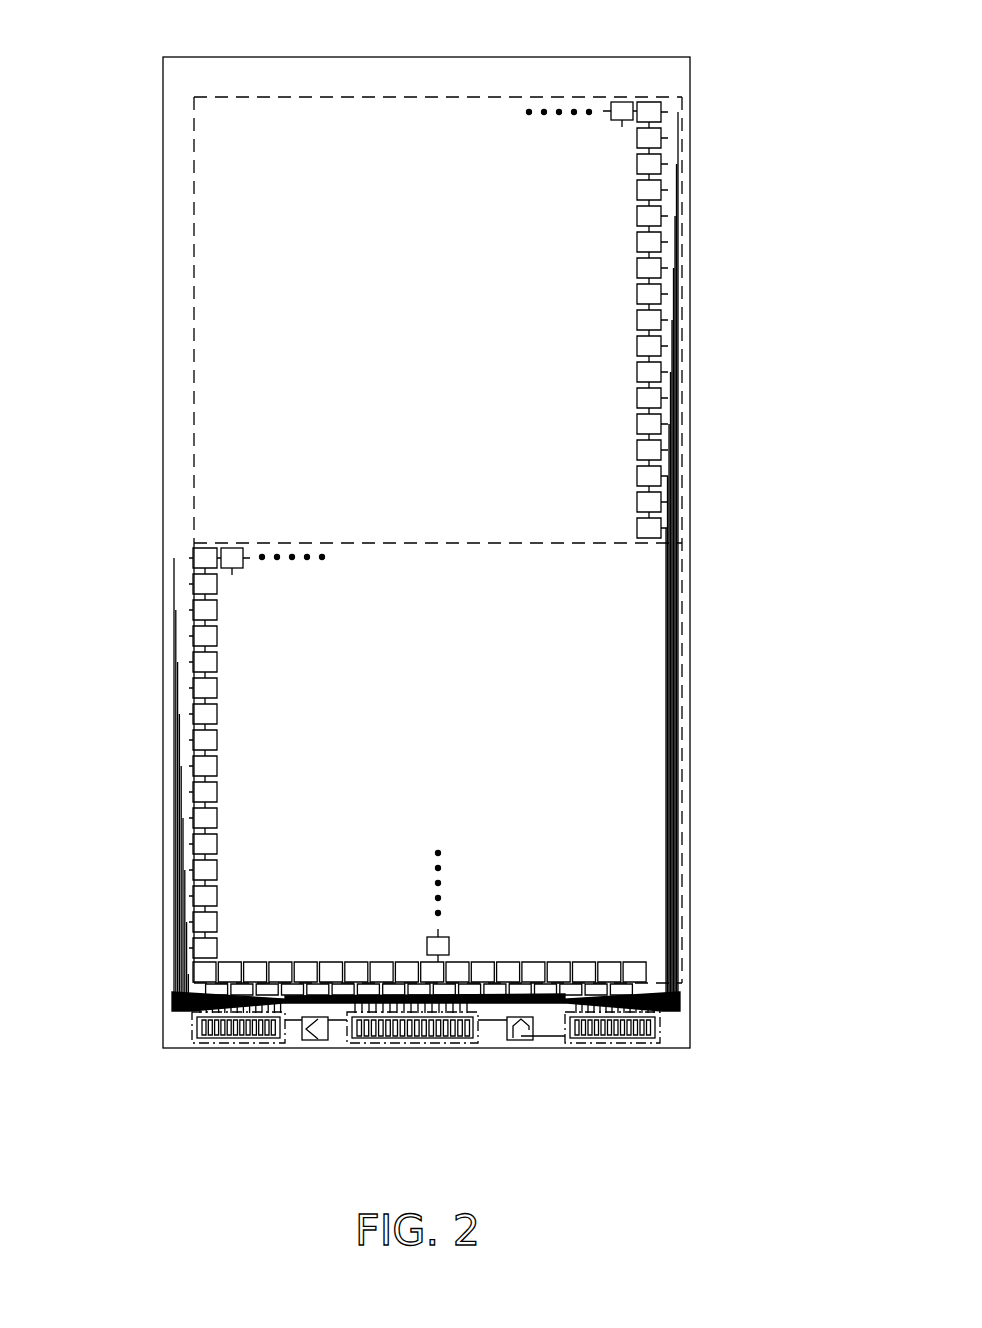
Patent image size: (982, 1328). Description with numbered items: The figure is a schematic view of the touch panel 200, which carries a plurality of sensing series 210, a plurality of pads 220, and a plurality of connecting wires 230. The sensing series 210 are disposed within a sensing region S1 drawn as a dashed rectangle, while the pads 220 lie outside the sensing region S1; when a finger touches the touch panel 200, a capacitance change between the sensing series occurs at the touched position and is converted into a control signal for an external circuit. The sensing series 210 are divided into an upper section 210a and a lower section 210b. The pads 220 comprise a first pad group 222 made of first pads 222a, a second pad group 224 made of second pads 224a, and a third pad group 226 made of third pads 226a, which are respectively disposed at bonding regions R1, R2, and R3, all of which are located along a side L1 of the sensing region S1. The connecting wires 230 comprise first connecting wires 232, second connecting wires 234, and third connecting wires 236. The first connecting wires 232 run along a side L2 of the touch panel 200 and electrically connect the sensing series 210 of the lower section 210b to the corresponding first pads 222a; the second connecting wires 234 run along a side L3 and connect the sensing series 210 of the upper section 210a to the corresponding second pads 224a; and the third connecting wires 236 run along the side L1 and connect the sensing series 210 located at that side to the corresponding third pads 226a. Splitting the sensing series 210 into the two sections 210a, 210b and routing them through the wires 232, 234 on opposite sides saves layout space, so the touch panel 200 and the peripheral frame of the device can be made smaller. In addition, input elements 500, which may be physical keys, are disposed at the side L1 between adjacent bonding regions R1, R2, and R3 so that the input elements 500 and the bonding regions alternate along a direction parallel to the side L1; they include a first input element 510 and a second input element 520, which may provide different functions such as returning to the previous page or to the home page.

The touch panel 200 is at (810, 1198).
The sensing region S1 is at (258, 96).
The sensing series 210 is at (649, 102).
The upper section 210a is at (228, 218).
The lower section 210b is at (228, 762).
The side L1 is at (636, 985).
The side L2 is at (190, 340).
The side L3 is at (685, 324).
The connecting wires 230 is at (427, 562).
The first connecting wires 232 is at (173, 826).
The second connecting wires 234 is at (678, 477).
The third connecting wires 236 is at (497, 988).
The pads 220 is at (417, 1073).
The first pad group 222 is at (185, 1075).
The first pads 222a is at (258, 1040).
The second pad group 224 is at (657, 1073).
The second pads 224a is at (597, 1042).
The third pad group 226 is at (423, 1075).
The third pads 226a is at (470, 1042).
The bonding region R1 is at (190, 1027).
The bonding region R2 is at (662, 1031).
The bonding region R3 is at (377, 1044).
The input element 500 is at (425, 1085).
The first input element 510 is at (328, 1042).
The second input element 520 is at (520, 1042).